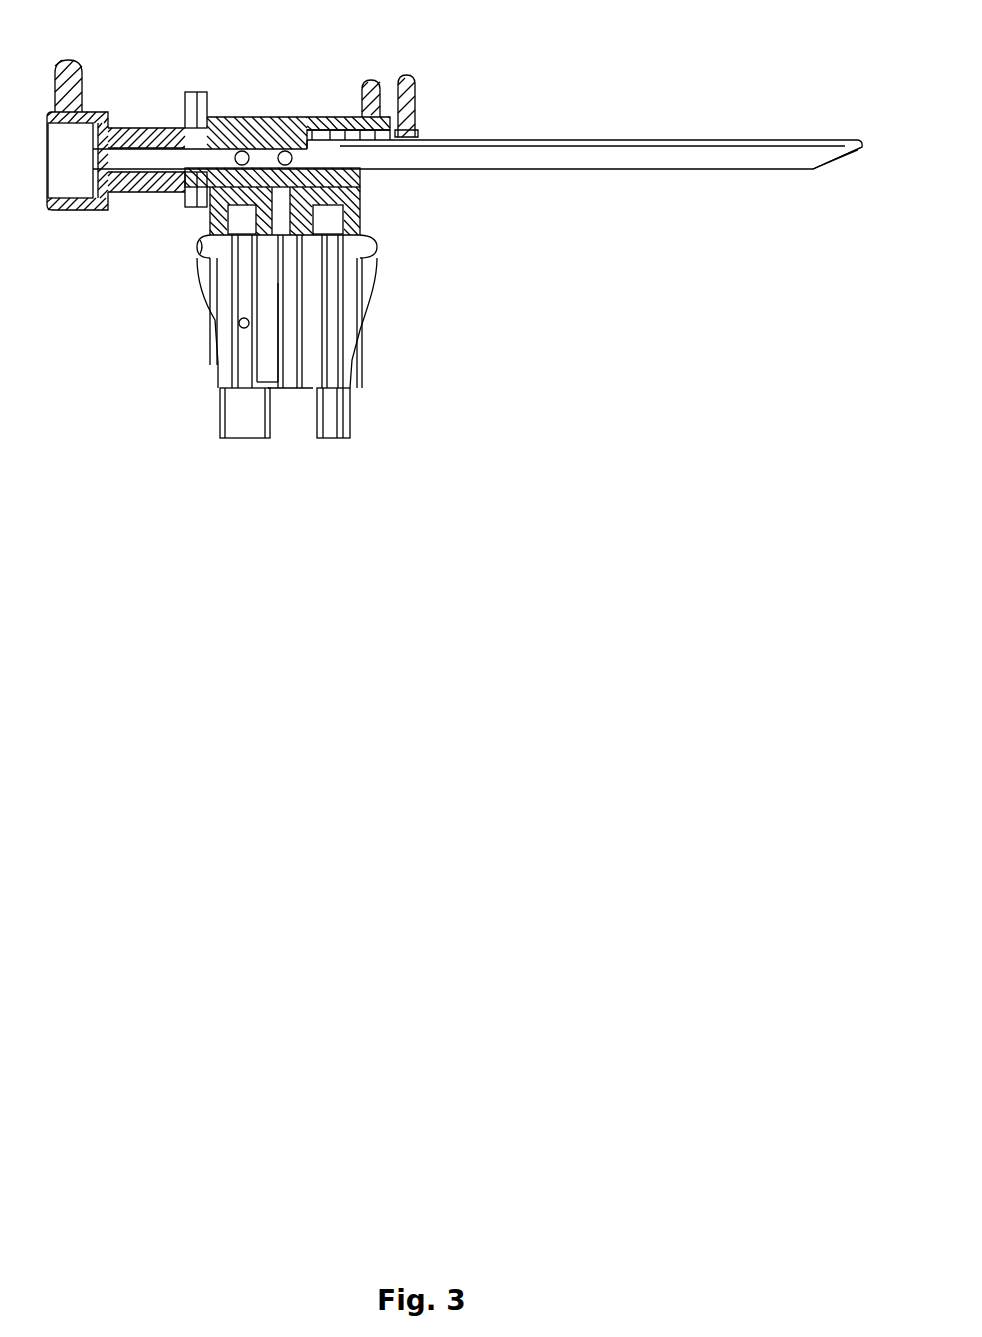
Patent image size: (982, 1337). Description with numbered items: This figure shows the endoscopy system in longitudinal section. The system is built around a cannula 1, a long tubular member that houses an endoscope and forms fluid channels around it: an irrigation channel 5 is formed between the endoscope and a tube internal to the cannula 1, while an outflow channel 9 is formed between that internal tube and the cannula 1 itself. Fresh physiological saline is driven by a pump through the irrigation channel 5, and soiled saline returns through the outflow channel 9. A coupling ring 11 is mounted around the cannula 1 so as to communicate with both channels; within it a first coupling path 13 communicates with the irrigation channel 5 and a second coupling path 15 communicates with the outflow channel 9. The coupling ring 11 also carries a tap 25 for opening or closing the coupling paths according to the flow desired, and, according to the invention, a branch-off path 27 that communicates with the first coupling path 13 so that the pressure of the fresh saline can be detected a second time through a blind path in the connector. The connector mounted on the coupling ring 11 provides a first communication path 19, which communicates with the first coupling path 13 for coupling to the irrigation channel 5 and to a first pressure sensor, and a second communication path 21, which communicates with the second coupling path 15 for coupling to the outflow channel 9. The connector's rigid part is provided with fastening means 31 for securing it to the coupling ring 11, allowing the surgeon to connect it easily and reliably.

The cannula 1 is at (683, 140).
The irrigation channel 5 is at (768, 172).
The outflow channel 9 is at (515, 145).
The coupling ring 11 is at (362, 211).
The first coupling path 13 is at (255, 120).
The second coupling path 15 is at (337, 117).
The first communication path 19 is at (225, 360).
The second communication path 21 is at (348, 405).
The tap 25 is at (300, 393).
The branch-off path 27 is at (290, 128).
The fastening means 31 is at (196, 240).